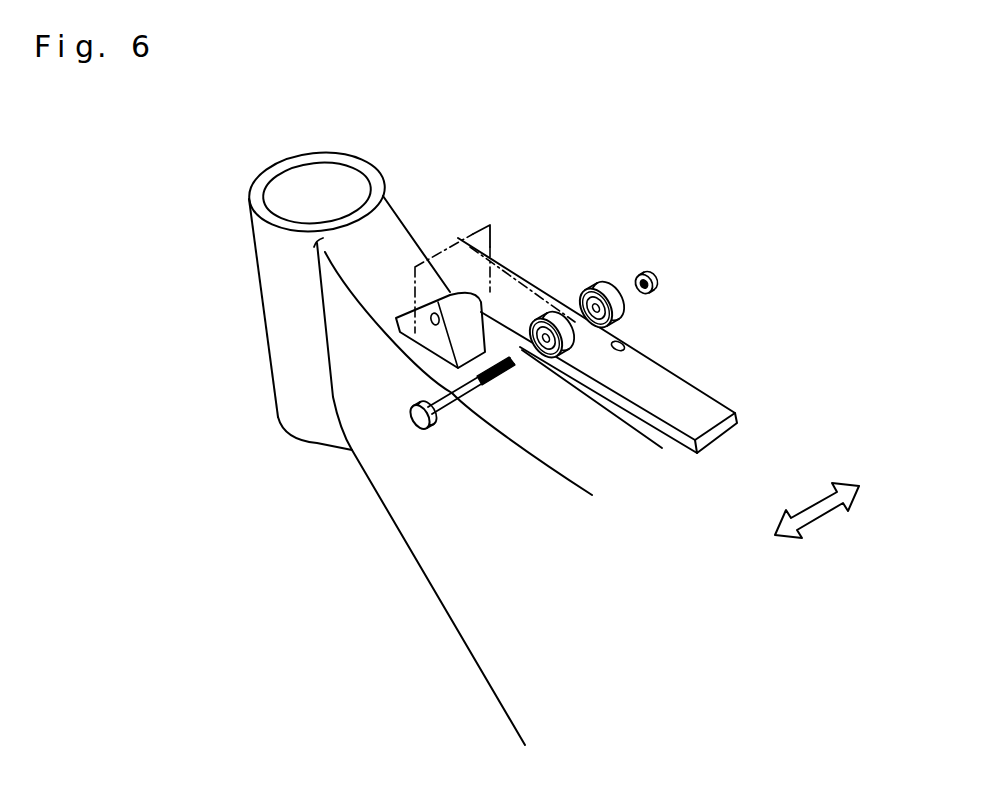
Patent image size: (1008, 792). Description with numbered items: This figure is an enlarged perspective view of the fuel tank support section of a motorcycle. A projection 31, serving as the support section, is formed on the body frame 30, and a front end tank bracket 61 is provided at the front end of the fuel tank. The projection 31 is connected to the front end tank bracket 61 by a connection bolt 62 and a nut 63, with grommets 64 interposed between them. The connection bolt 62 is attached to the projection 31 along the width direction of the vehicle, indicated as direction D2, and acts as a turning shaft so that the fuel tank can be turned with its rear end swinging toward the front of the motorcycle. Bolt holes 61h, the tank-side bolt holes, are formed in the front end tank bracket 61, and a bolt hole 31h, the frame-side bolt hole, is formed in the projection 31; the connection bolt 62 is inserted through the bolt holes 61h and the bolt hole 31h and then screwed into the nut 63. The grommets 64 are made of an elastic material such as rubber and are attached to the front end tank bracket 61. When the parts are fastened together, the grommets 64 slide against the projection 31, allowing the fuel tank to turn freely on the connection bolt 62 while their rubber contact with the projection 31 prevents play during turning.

The body frame 30 is at (399, 213).
The projection 31 is at (408, 345).
The bolt hole 31h is at (431, 323).
The front end tank bracket 61 is at (712, 387).
The bolt holes 61h is at (622, 350).
The connection bolt 62 is at (446, 405).
The nut 63 is at (653, 282).
The grommets 64 is at (582, 296).
The width direction of the vehicle D2 is at (812, 508).